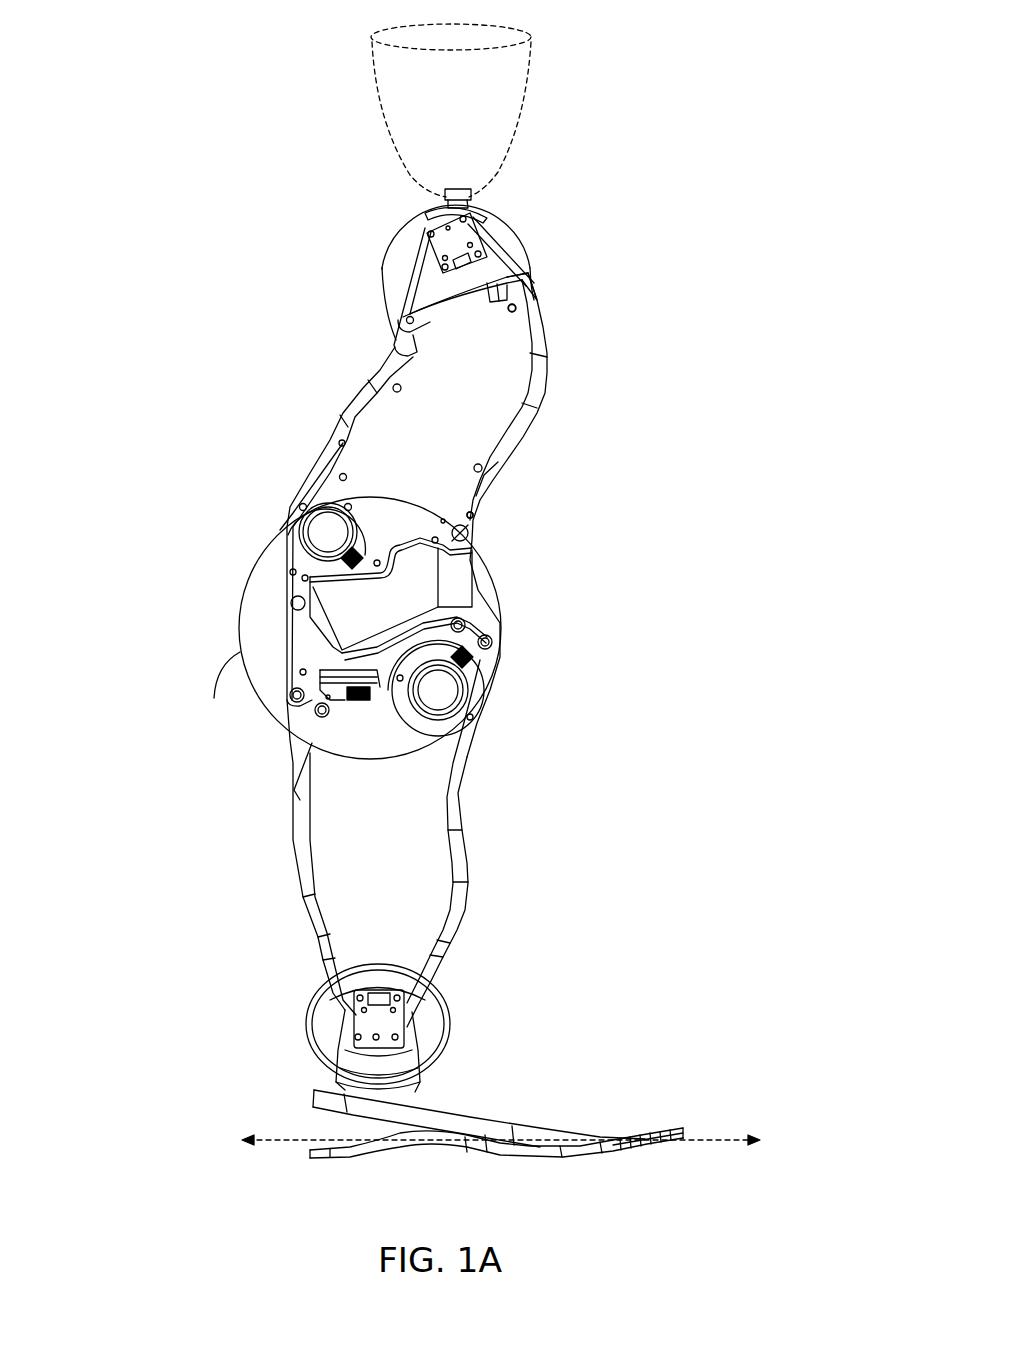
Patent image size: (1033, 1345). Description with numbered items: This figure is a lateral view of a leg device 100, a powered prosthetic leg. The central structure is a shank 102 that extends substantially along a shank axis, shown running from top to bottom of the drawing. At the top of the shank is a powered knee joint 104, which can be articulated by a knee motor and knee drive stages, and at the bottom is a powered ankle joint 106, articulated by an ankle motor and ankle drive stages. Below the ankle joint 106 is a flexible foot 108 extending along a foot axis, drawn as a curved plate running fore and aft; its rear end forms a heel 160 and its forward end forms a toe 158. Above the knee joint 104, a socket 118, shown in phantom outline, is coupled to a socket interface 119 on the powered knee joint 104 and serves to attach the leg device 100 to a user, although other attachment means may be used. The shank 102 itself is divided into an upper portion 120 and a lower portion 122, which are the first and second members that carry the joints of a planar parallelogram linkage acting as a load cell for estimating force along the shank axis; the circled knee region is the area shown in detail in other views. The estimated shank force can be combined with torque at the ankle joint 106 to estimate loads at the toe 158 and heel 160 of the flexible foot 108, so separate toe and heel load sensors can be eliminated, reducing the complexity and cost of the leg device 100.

The leg device 100 is at (645, 60).
The shank 102 is at (154, 165).
The powered knee joint 104 is at (550, 160).
The powered ankle joint 106 is at (287, 962).
The flexible foot 108 is at (690, 1174).
The socket 118 is at (380, 108).
The socket interface 119 is at (458, 190).
The upper portion 120 is at (225, 165).
The lower portion 122 is at (512, 623).
The toe 158 is at (598, 1137).
The heel 160 is at (312, 1156).